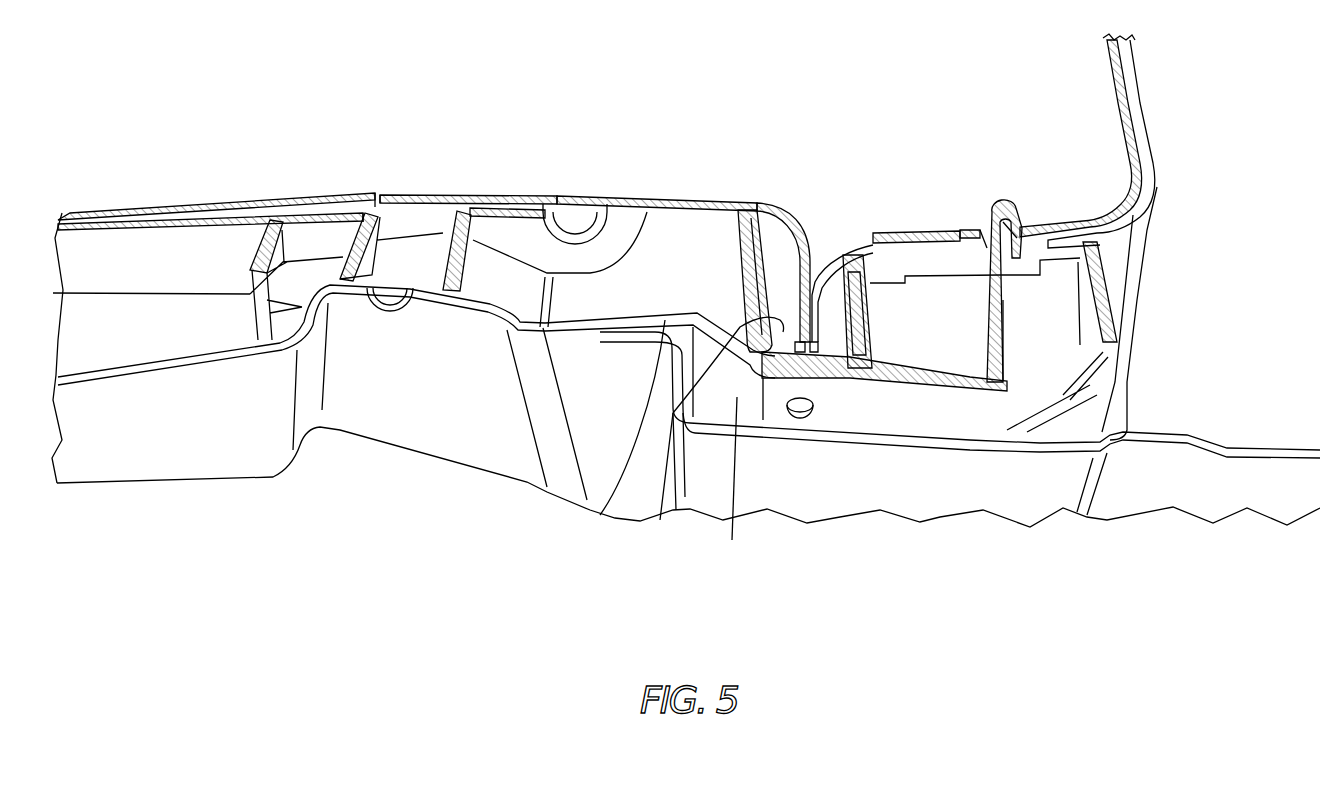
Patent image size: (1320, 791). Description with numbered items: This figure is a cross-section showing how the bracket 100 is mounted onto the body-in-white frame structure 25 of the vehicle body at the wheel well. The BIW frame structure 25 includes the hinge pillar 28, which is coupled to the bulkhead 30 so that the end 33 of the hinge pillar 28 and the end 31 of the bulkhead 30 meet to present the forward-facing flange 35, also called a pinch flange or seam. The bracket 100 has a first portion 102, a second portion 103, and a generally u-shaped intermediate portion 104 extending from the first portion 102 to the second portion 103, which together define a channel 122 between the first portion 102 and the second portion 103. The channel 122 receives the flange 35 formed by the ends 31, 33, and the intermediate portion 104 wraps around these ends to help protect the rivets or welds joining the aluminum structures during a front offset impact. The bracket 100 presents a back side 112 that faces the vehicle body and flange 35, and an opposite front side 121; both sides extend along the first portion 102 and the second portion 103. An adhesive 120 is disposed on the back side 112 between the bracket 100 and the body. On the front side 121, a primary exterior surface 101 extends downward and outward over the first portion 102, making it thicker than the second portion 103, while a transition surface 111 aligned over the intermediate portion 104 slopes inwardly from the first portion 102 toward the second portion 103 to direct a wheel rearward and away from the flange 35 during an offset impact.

The body-in-white frame structure 25 is at (1178, 120).
The hinge pillar 28 is at (850, 245).
The bulkhead 30 is at (630, 203).
The end of the bulkhead 31 is at (802, 285).
The end of the hinge pillar 33 is at (810, 295).
The flange 35 is at (797, 347).
The bracket 100 is at (722, 393).
The primary exterior surface 101 is at (922, 415).
The first portion 102 is at (1007, 363).
The second portion 103 is at (600, 515).
The intermediate portion 104 is at (827, 385).
The transition surface 111 is at (732, 540).
The back side 112 is at (750, 305).
The adhesive 120 is at (317, 210).
The front side 121 is at (873, 398).
The channel 122 is at (660, 520).